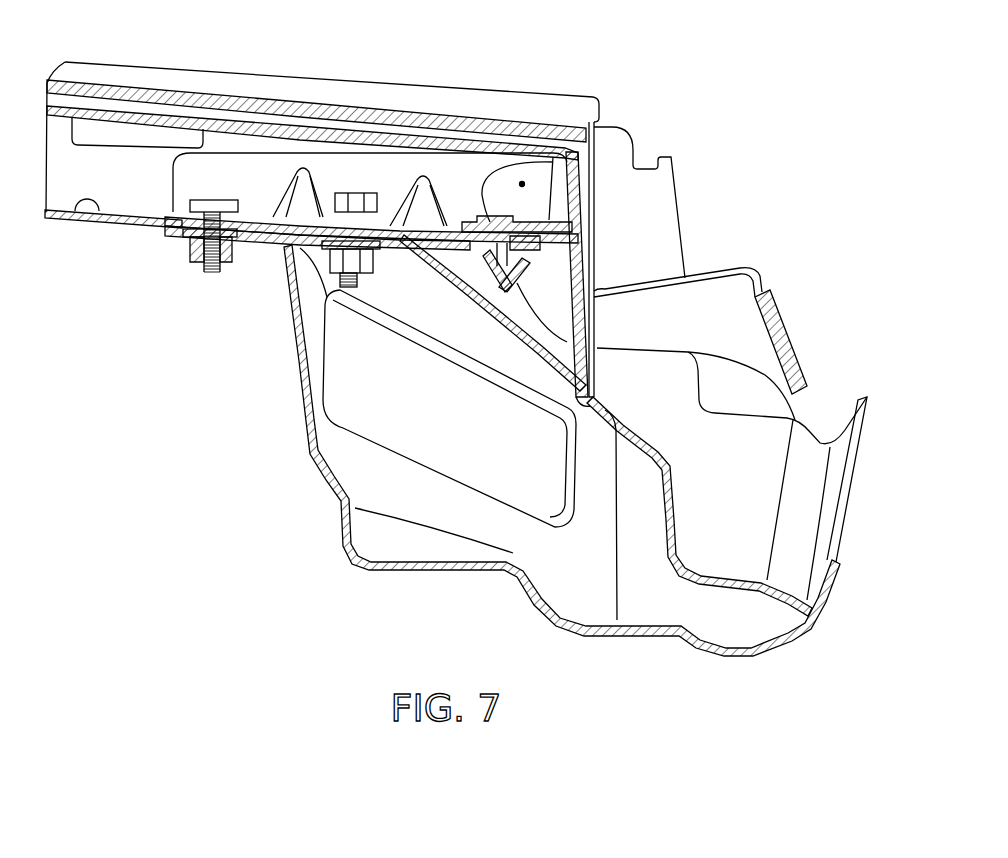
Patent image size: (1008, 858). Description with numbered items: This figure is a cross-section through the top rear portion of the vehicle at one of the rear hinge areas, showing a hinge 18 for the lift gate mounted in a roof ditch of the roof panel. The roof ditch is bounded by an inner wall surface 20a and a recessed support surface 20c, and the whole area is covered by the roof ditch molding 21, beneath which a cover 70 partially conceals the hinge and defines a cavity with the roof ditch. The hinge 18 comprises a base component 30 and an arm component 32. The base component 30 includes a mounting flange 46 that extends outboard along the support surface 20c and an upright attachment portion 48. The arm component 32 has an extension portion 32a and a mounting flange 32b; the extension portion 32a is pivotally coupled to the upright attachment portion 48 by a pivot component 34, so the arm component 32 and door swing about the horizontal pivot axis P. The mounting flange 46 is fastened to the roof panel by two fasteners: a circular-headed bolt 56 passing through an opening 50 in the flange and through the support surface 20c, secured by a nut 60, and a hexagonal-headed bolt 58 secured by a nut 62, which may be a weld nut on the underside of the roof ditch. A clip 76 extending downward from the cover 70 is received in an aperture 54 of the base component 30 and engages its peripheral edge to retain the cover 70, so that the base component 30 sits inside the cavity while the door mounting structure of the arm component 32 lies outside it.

The inner wall surface 20a is at (117, 172).
The recessed support surface 20c is at (68, 219).
The roof ditch molding 21 is at (437, 83).
The cover 70 is at (538, 142).
The upright attachment portion 48 is at (213, 182).
The pivot component 34 is at (533, 203).
The pivot axis P is at (522, 184).
The opening 50 is at (258, 227).
The mounting flange 46 is at (258, 240).
The bolt 56 is at (211, 274).
The nut 60 is at (191, 255).
The bolt 58 is at (350, 290).
The nut 62 is at (373, 265).
The aperture 54 is at (513, 243).
The base component 30 is at (459, 207).
The clip 76 is at (490, 276).
The hinge 18 is at (628, 239).
The arm component 32 is at (727, 268).
The extension portion 32a is at (651, 333).
The mounting flange 32b is at (792, 343).